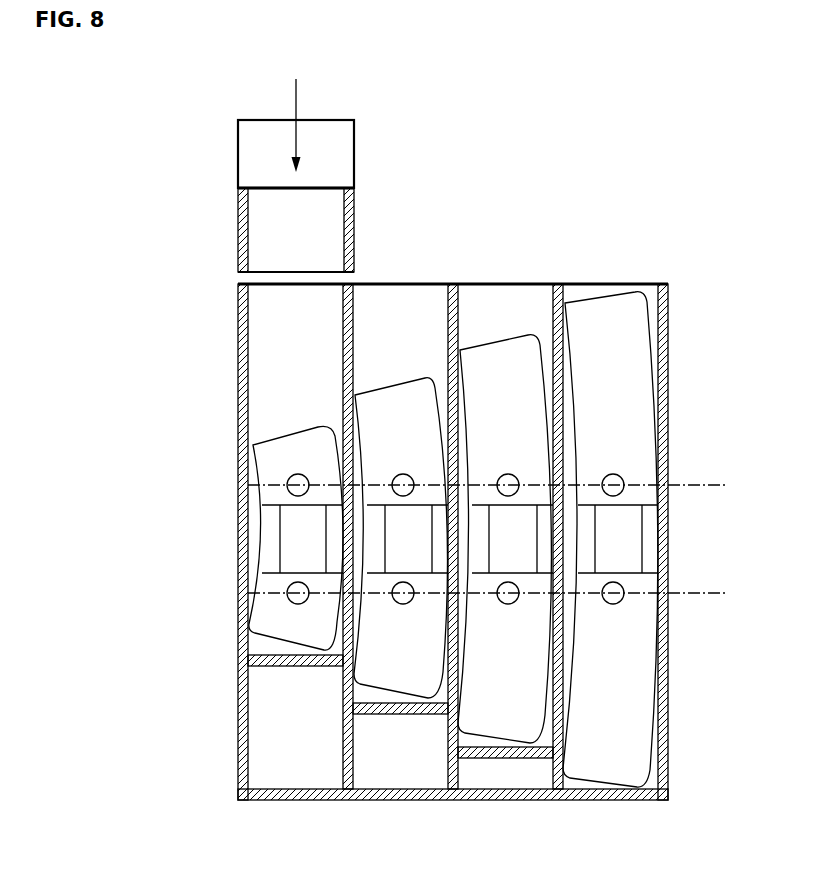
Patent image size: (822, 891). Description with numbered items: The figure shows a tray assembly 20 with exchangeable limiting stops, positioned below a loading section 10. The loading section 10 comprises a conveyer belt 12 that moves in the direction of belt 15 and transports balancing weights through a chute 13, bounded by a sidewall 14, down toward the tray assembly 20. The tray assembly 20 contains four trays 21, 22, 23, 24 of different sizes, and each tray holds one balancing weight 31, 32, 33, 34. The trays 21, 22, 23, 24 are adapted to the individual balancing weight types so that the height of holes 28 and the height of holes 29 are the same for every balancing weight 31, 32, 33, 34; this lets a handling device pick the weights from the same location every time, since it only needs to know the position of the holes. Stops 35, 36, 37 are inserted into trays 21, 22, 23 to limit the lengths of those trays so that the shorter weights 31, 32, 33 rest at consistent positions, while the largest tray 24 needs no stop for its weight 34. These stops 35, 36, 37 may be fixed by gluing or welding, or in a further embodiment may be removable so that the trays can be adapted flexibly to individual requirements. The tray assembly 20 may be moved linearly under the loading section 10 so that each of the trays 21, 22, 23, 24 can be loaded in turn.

The loading section 10 is at (283, 174).
The belt 12 is at (333, 152).
The chute 13 is at (332, 226).
The sidewall 14 is at (352, 193).
The direction of belt 15 is at (293, 92).
The tray assembly 20 is at (652, 226).
The tray 21 is at (295, 300).
The tray 22 is at (401, 300).
The tray 23 is at (509, 300).
The tray 24 is at (605, 292).
The height of holes 28 is at (710, 480).
The height of holes 29 is at (710, 598).
The balancing weight 31 is at (314, 623).
The balancing weight 32 is at (422, 667).
The balancing weight 33 is at (527, 717).
The balancing weight 34 is at (607, 755).
The stop 35 is at (272, 666).
The stop 36 is at (378, 714).
The stop 37 is at (480, 758).